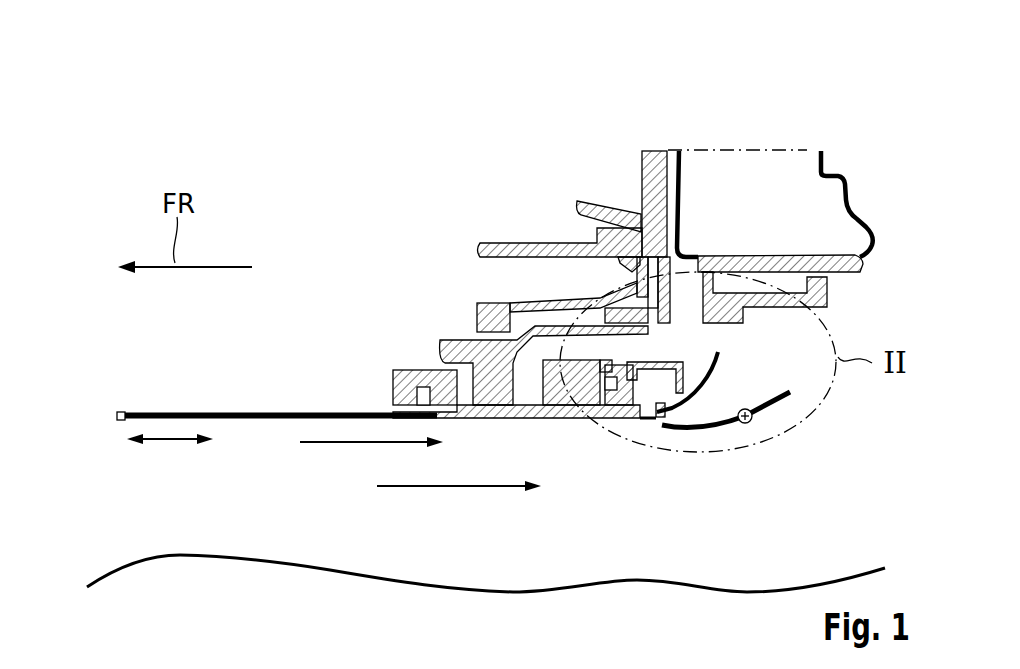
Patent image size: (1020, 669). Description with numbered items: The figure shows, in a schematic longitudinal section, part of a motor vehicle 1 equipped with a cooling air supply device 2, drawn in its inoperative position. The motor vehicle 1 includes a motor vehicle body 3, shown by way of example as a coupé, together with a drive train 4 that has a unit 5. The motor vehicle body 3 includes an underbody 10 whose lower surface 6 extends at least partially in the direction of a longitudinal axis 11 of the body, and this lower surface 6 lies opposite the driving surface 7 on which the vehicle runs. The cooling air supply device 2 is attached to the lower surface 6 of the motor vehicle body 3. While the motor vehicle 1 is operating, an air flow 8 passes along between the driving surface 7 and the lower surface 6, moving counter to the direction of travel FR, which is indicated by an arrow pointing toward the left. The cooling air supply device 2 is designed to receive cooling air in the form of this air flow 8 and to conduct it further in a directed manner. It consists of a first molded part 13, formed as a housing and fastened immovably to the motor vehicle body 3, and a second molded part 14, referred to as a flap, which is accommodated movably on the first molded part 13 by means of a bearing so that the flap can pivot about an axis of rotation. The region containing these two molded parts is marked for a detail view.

The motor vehicle 1 is at (791, 149).
The cooling air supply device 2 is at (698, 401).
The motor vehicle body 3 is at (100, 413).
The drive train 4 is at (662, 127).
The unit 5 is at (866, 262).
The lower surface 6 is at (237, 442).
The driving surface 7 is at (313, 565).
The air flow 8 is at (447, 489).
The underbody 10 is at (174, 412).
The longitudinal axis 11 is at (173, 443).
The first molded part 13 is at (722, 367).
The second molded part 14 is at (697, 431).